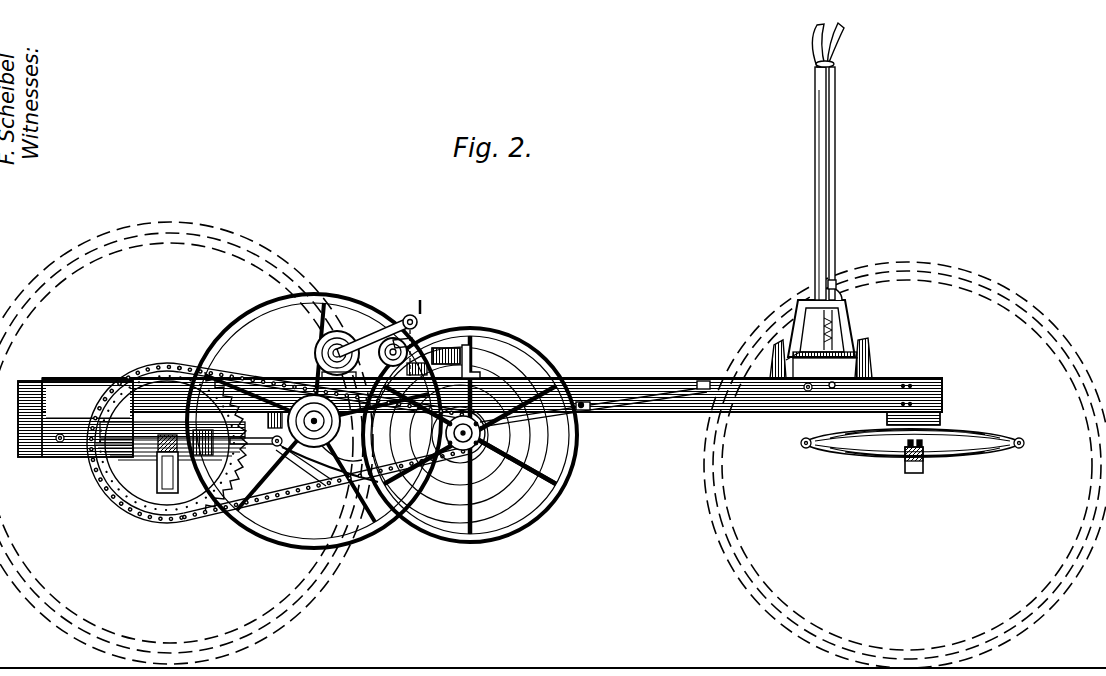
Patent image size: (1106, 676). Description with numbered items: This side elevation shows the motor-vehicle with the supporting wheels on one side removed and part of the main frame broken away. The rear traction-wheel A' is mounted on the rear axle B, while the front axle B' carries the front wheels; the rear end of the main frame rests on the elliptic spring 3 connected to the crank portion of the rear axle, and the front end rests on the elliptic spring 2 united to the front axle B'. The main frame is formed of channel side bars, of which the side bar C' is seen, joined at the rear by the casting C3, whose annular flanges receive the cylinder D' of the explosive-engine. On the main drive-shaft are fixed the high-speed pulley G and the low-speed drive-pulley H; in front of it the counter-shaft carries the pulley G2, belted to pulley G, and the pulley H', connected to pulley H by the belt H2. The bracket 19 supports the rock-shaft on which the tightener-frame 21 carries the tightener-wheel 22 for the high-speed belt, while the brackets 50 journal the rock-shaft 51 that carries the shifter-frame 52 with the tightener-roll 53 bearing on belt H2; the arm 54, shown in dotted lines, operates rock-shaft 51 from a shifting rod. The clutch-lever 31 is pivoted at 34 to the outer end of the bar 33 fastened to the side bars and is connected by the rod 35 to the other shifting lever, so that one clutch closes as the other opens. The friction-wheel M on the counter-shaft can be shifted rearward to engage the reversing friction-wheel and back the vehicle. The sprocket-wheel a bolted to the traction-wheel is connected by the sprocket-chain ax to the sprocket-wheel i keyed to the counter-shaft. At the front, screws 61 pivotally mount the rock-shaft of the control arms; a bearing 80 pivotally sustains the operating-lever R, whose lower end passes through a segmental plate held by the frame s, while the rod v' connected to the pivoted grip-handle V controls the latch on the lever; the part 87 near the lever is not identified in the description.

The rear traction-wheel A' is at (186, 433).
The side bar C' is at (492, 372).
The cylinder D' is at (75, 419).
The high-speed pulley G is at (292, 368).
The low-speed drive-pulley H is at (325, 428).
The belt H2 is at (378, 482).
The elliptic spring 3 is at (150, 462).
The rear axle B is at (148, 497).
The casting C3 is at (124, 480).
The sprocket-chain ax is at (217, 518).
The sprocket-wheel a is at (182, 520).
The friction-wheel M is at (578, 463).
The pulley H' is at (523, 473).
The pulley G2 is at (497, 505).
The sprocket-wheel i is at (492, 482).
The tightener-roll 53 is at (340, 350).
The shifter-frame 52 is at (372, 345).
The tightener-wheel 22 is at (393, 340).
The brackets 50 is at (405, 343).
The rock-shaft 51 is at (416, 317).
The arm 54 is at (420, 300).
The tightener-frame 21 is at (450, 352).
The bracket 19 is at (478, 362).
The clutch-lever 31 is at (614, 412).
The bar 33 is at (585, 405).
The pivot 34 is at (580, 402).
The rod 35 is at (706, 384).
The screws 61 is at (810, 392).
The bearing 80 is at (818, 296).
The frame s is at (778, 352).
The operating-lever R is at (809, 183).
The rod v' is at (845, 183).
The collar 87 is at (836, 284).
The grip-handle V is at (834, 45).
The elliptic spring 2 is at (912, 431).
The front axle B' is at (913, 477).